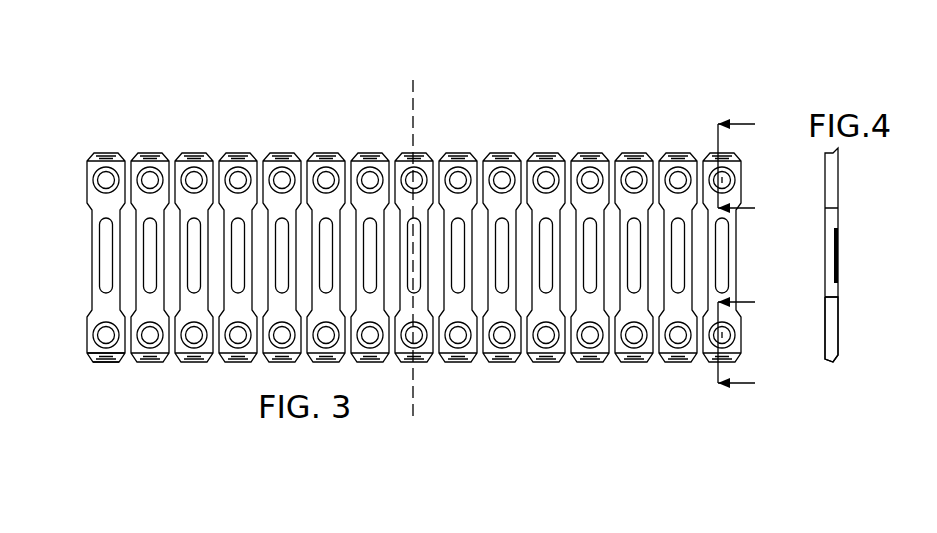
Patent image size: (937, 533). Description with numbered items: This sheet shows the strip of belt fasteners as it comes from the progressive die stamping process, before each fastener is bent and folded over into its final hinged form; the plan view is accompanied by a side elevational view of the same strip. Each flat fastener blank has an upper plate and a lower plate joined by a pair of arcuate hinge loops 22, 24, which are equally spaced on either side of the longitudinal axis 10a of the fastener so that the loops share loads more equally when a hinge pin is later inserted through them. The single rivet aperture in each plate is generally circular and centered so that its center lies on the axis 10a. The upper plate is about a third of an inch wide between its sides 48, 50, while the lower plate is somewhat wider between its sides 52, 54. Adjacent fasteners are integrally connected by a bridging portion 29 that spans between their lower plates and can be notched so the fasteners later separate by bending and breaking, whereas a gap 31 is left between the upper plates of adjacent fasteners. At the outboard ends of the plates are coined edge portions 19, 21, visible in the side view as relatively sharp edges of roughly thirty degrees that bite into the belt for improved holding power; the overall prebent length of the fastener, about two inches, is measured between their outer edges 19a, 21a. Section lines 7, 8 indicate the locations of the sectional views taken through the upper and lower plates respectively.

In FIG. 3, the longitudinal axis 10a is at (413, 105).
In FIG. 3, the outer edge of coined outboard edge portion 19a is at (84, 263).
In FIG. 3, the side of upper plate 48 is at (87, 182).
In FIG. 3, the side of upper plate 50 is at (128, 183).
In FIG. 3, the arcuate hinge loop 22 is at (419, 229).
In FIG. 3, the arcuate hinge loop 24 is at (425, 262).
In FIG. 3, the gap 31 is at (653, 161).
In FIG. 3, the bridging portion 29 is at (646, 329).
In FIG. 3, the side of lower plate 52 is at (86, 331).
In FIG. 3, the side of lower plate 54 is at (137, 332).
In FIG. 3, the outer edge of coined outboard edge portion 21a is at (98, 363).
In FIG. 3, the section line 7- 7 is at (743, 167).
In FIG. 3, the section line 8- 8 is at (744, 343).
In FIG. 4, the coined outboard edge portion 19 is at (802, 290).
In FIG. 4, the coined outboard edge portion 21 is at (832, 361).